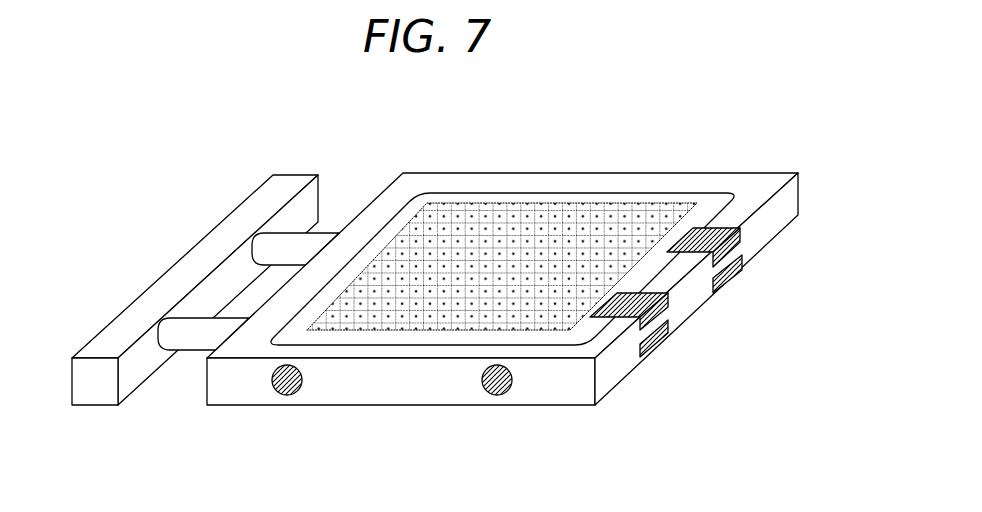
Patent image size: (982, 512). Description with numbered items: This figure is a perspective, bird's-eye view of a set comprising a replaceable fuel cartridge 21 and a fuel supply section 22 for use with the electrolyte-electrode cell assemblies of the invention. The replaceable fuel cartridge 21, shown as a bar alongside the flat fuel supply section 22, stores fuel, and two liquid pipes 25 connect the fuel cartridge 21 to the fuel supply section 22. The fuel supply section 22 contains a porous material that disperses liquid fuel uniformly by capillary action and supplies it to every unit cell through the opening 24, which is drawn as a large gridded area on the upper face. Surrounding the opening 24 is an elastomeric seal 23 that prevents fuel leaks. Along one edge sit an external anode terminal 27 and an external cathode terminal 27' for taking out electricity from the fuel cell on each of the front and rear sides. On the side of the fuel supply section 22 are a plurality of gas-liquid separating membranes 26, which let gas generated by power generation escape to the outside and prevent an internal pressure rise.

The replaceable fuel cartridge 21 is at (200, 262).
The fuel supply section 22 is at (440, 180).
The elastomeric seal 23 is at (553, 195).
The opening 24 is at (633, 217).
The liquid pipes 25 is at (188, 343).
The gas-liquid separating membranes 26 is at (295, 392).
The external anode terminal 27 is at (714, 283).
The external cathode terminal 27' is at (726, 315).